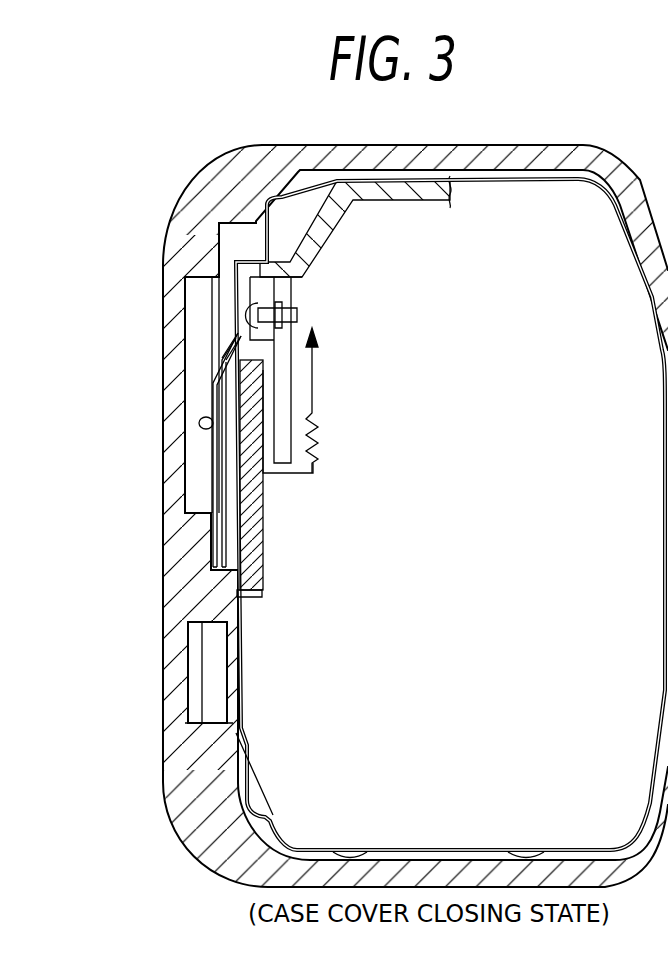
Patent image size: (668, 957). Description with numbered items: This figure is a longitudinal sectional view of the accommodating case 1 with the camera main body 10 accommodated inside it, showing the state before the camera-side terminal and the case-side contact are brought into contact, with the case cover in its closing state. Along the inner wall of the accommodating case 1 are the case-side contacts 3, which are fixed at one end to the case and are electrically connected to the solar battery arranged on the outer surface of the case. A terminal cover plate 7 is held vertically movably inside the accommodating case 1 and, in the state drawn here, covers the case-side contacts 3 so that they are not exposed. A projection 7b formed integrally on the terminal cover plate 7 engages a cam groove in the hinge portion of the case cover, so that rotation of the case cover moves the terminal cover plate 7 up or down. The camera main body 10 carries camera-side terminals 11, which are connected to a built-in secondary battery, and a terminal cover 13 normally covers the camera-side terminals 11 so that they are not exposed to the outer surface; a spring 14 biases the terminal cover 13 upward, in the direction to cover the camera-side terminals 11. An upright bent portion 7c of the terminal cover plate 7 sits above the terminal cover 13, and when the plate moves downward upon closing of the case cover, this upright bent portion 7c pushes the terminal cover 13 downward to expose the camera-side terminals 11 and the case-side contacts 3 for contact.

The accommodating case 1 is at (286, 158).
The camera main body 10 is at (401, 190).
The camera-side terminals 11 is at (298, 313).
The upright bent portion 7c is at (222, 340).
The case-side contacts 3 is at (220, 390).
The projection 7b is at (200, 422).
The terminal cover plate 7 is at (218, 440).
The terminal cover 13 is at (262, 385).
The spring 14 is at (312, 437).